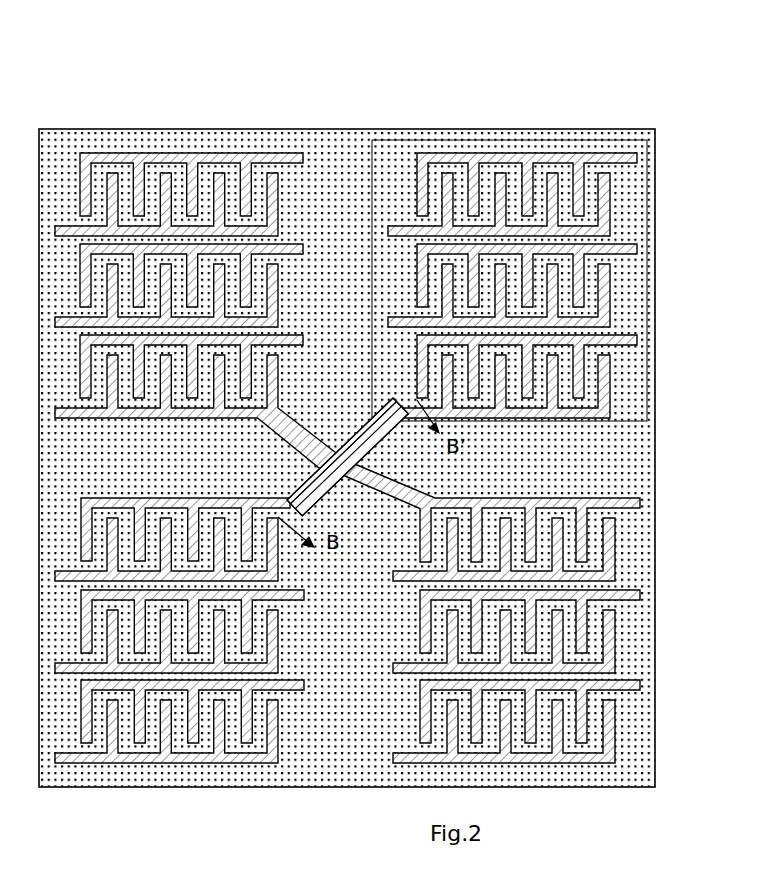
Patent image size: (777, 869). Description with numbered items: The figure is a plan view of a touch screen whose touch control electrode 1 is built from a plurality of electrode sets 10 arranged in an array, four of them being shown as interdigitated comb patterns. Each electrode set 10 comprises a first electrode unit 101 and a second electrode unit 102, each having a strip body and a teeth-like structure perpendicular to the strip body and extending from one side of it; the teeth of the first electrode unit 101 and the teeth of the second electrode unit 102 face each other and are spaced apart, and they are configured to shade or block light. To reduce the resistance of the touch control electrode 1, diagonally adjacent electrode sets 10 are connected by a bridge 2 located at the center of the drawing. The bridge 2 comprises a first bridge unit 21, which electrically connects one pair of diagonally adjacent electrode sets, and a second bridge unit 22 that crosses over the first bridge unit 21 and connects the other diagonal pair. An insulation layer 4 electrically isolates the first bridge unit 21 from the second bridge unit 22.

The touch control electrode 1 is at (179, 121).
The first electrode unit 101 is at (220, 158).
The second electrode unit 102 is at (232, 50).
The bridge 2 is at (347, 261).
The first bridge unit 21 is at (324, 435).
The second bridge unit 22 is at (362, 437).
The insulation layer 4 is at (283, 140).
The electrode set 10 is at (465, 140).